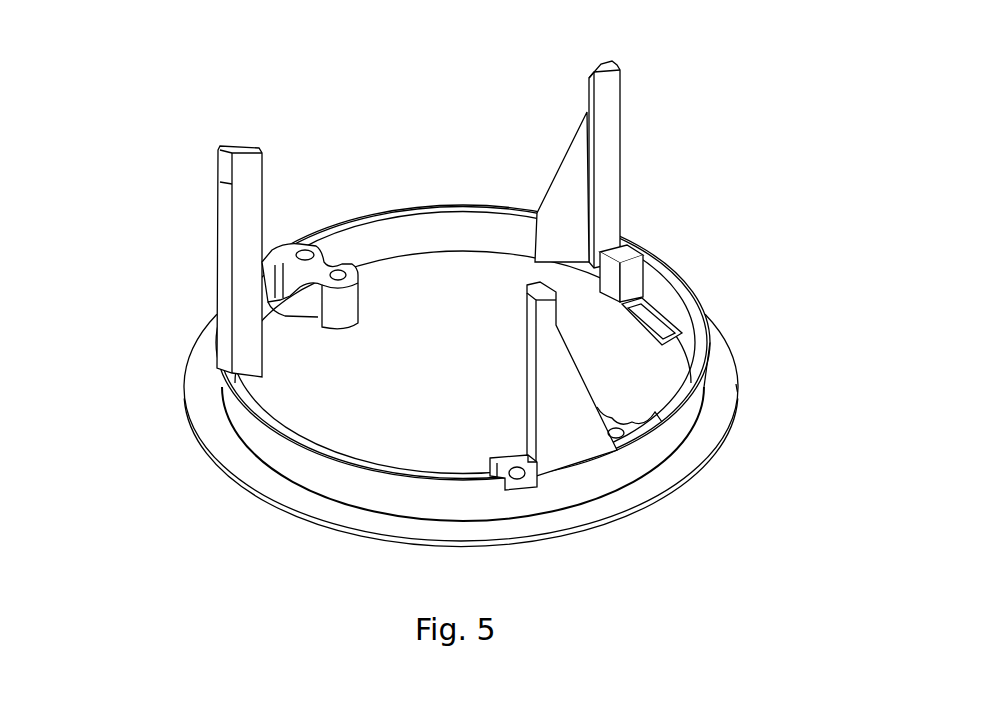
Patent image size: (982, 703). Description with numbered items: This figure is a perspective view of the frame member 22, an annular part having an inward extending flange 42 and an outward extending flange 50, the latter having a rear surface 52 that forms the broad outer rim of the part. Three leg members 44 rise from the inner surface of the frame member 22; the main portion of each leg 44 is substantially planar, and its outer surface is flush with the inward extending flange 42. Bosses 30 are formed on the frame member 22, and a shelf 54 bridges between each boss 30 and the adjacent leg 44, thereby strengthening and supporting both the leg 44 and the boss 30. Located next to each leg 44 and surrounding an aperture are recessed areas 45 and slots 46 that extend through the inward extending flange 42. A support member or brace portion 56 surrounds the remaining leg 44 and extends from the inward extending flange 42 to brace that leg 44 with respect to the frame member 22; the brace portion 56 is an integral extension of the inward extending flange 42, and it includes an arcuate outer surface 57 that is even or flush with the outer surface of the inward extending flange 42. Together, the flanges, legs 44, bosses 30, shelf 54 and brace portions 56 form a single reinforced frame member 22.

The frame member 22 is at (138, 96).
The boss 30 is at (347, 308).
The inward extending flange 42 is at (463, 363).
The leg member 44 is at (258, 213).
The recessed area 45 is at (512, 468).
The slot 46 is at (628, 250).
The outward extending flange 50 is at (737, 385).
The rear surface 52 is at (673, 467).
The shelf 54 is at (283, 325).
The brace portion 56 is at (103, 237).
The arcuate outer surface 57 is at (563, 412).